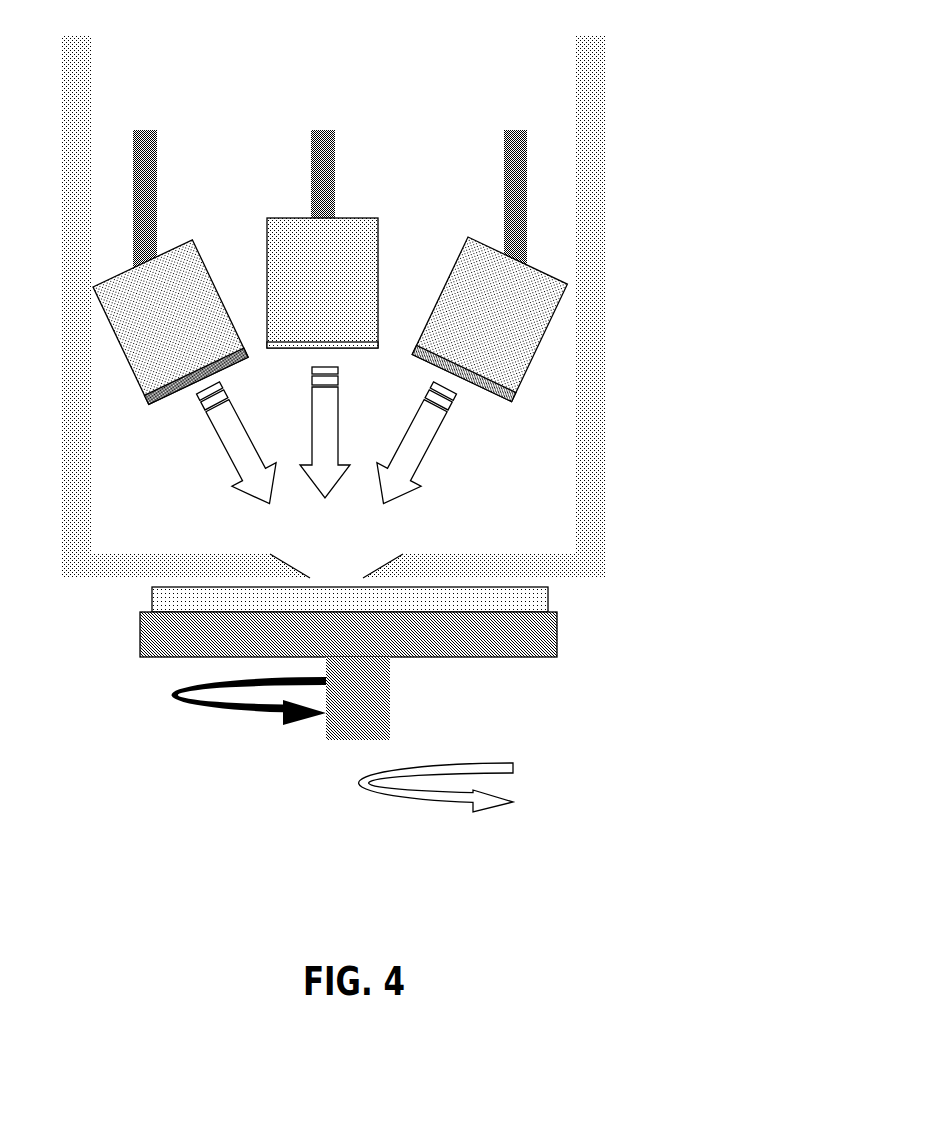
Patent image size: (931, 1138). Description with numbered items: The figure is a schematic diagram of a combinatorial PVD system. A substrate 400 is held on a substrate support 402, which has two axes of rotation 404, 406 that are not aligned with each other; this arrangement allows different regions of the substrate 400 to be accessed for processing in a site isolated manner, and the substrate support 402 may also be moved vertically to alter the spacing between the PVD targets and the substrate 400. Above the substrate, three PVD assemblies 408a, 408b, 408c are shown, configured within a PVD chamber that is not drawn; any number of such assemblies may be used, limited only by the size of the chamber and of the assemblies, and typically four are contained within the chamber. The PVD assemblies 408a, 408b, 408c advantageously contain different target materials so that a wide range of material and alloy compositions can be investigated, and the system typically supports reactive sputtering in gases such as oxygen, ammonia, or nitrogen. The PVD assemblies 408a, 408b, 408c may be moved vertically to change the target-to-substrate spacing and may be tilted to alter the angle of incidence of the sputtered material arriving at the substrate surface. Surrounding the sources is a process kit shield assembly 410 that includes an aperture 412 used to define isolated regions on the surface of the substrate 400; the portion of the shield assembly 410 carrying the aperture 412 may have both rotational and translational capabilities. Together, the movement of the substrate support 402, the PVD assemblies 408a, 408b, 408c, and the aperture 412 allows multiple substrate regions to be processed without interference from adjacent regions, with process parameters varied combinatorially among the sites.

The substrate 400 is at (556, 600).
The substrate support 402 is at (557, 640).
The first axis of rotation 404 is at (225, 714).
The second axis of rotation 406 is at (397, 798).
The PVD assembly 408a is at (147, 127).
The PVD assembly 408b is at (325, 127).
The PVD assembly 408c is at (515, 128).
The process kit shield assembly 410 is at (607, 273).
The aperture 412 is at (335, 573).